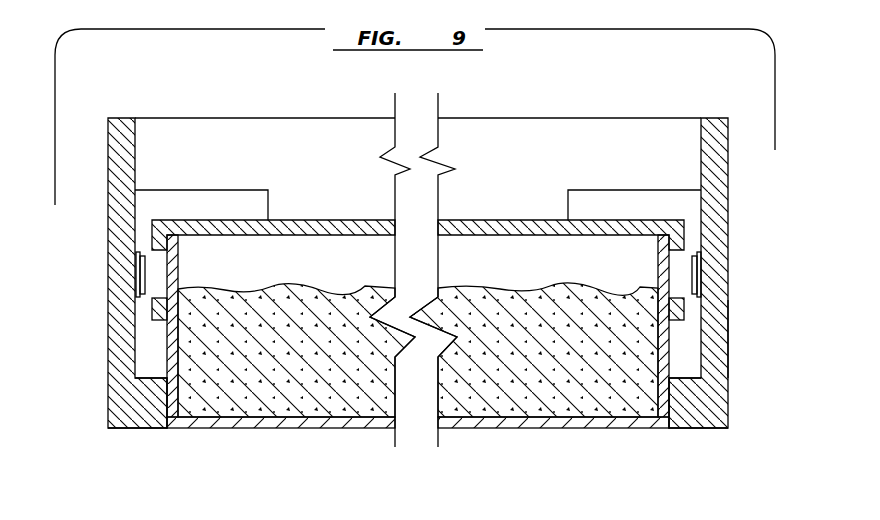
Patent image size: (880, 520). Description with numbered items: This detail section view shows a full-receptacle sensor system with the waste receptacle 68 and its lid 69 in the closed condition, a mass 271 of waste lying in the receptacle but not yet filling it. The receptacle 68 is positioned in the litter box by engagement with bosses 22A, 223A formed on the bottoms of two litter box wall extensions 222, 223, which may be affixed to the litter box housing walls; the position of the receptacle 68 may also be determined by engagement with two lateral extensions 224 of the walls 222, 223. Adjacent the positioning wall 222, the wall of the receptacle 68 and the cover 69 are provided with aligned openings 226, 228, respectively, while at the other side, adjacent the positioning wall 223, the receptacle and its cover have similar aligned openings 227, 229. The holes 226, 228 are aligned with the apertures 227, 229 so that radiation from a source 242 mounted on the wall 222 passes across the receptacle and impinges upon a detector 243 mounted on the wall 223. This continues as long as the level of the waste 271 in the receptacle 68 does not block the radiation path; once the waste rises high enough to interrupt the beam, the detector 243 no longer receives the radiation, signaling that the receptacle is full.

The litter box wall extension 222 is at (135, 157).
The litter box wall extension 223 is at (702, 148).
The left bottom portion of housing 22A is at (138, 412).
The boss 223A is at (692, 410).
The lateral extension 224 is at (215, 205).
The lid 69 is at (356, 220).
The waste receptacle 68 is at (348, 423).
The opening 226 is at (172, 275).
The aperture 227 is at (662, 277).
The opening 228 is at (155, 288).
The aperture 229 is at (730, 333).
The source 242 is at (108, 254).
The detector 243 is at (697, 272).
The mass of waste 271 is at (300, 403).